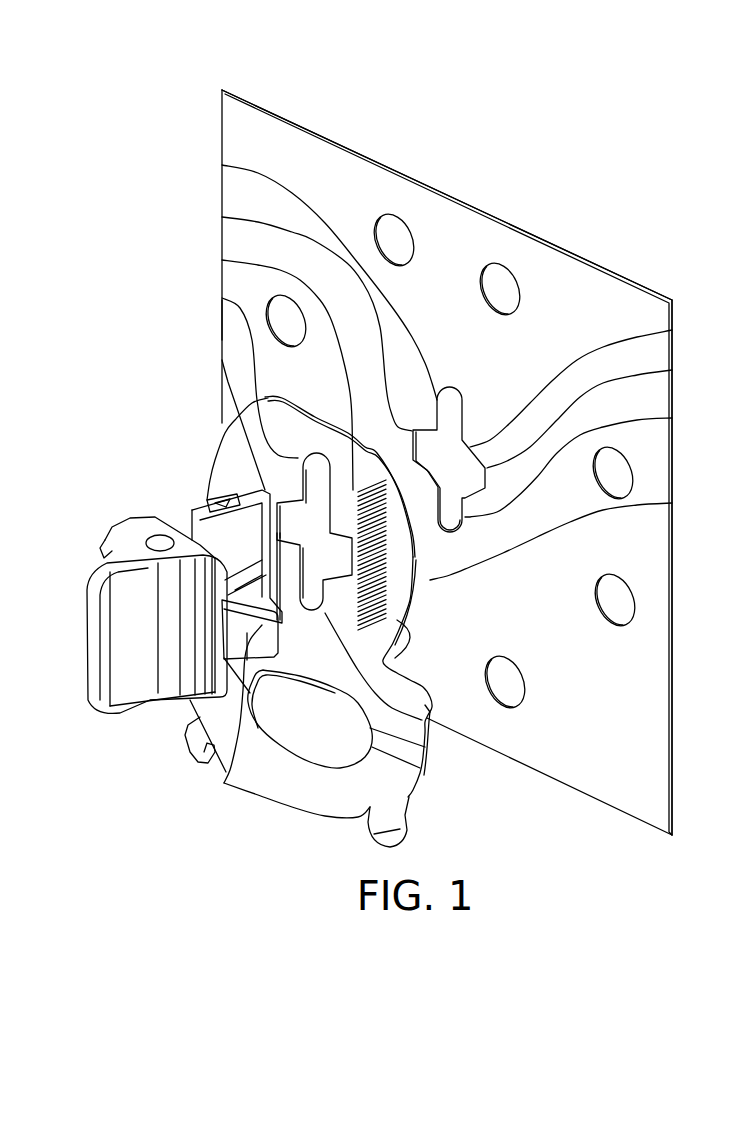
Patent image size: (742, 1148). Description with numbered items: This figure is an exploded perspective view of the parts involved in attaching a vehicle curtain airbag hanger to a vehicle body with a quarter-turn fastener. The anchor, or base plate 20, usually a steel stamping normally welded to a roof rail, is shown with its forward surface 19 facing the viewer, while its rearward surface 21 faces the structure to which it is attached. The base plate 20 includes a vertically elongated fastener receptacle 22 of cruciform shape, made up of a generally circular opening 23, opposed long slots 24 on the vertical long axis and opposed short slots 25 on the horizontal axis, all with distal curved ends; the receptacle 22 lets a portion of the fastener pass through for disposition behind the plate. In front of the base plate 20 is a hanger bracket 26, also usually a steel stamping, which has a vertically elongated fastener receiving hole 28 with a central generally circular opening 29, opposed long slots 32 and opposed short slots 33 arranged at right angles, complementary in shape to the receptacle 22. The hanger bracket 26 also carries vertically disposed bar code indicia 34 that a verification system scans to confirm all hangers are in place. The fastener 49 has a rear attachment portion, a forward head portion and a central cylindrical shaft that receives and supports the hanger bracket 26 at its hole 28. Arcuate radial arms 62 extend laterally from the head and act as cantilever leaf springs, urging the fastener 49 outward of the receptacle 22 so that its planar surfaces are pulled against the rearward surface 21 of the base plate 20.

The forward surface 19 is at (243, 138).
The base plate 20 is at (222, 105).
The rearward surface 21 is at (672, 583).
The fastener receptacle 22 is at (464, 400).
The generally circular opening 23 is at (672, 330).
The long slots 24 is at (222, 165).
The short slots 25 is at (222, 217).
The hanger bracket 26 is at (265, 797).
The fastener receiving hole 28 is at (318, 612).
The central generally circular opening 29 is at (222, 360).
The long slots 32 is at (222, 298).
The short slots 33 is at (222, 260).
The bar code indicia 34 is at (672, 503).
The fastener 49 is at (136, 708).
The arcuate radial arms 62 is at (120, 524).